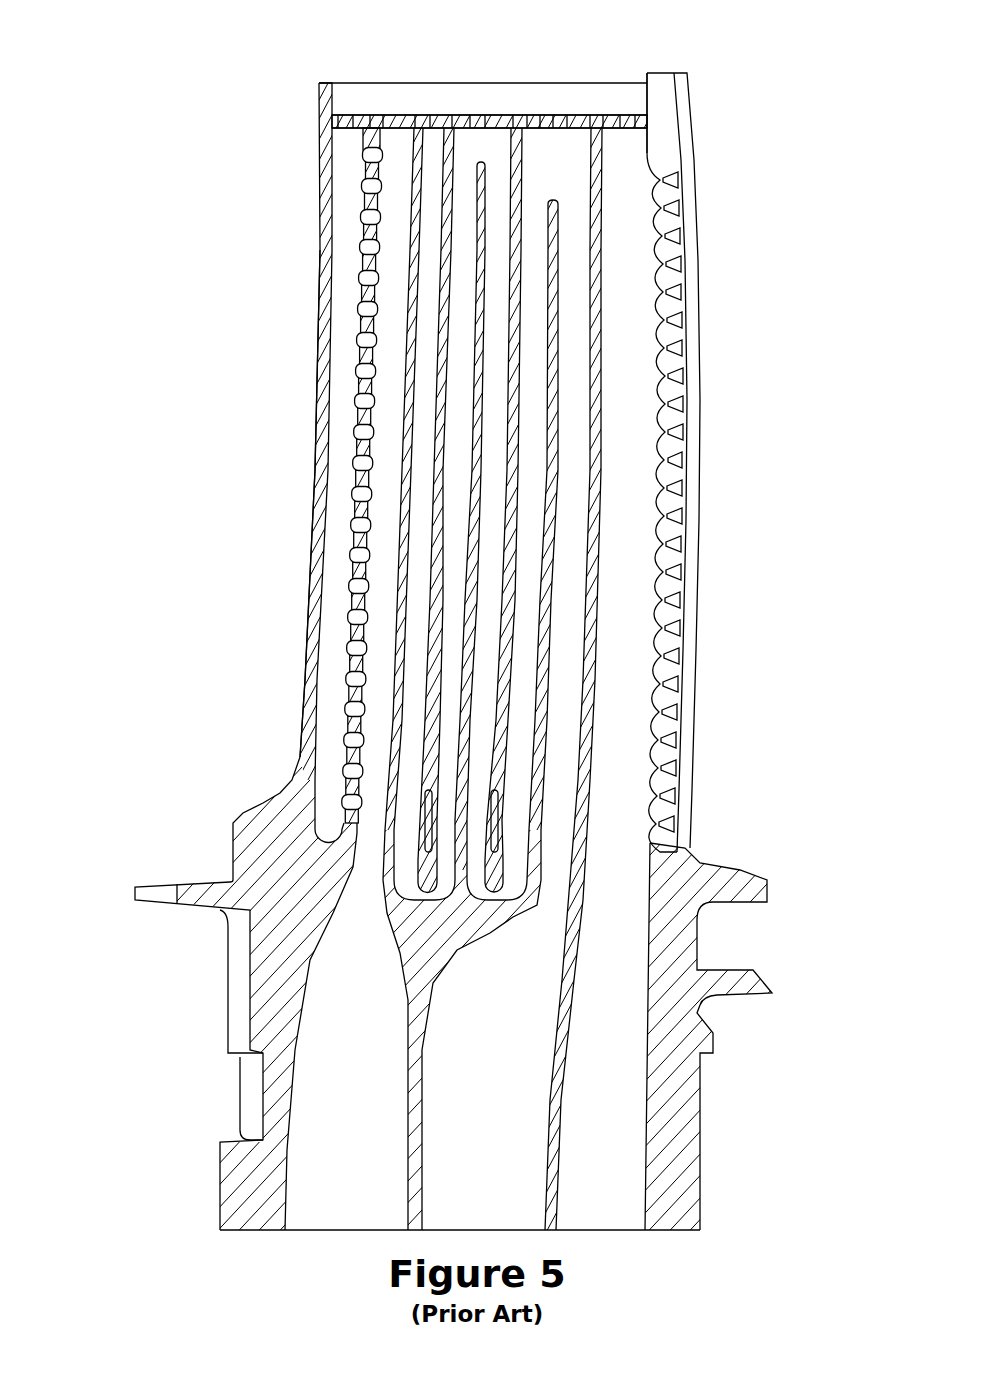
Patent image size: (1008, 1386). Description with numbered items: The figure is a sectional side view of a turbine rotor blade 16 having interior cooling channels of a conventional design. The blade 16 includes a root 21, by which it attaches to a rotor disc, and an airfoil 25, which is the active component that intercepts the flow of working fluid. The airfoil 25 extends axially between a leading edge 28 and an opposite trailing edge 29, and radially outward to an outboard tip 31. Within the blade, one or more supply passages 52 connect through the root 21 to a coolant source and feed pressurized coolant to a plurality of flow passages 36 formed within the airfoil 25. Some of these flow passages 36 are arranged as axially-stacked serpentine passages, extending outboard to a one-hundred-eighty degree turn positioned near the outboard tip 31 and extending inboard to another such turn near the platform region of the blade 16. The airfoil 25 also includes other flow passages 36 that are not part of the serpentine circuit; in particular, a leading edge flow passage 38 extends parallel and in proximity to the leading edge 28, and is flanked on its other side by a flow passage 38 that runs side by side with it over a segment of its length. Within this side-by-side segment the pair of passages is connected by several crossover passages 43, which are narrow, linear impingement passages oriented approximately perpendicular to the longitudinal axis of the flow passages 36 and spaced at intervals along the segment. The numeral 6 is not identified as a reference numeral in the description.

The turbine rotor blade 16 is at (132, 201).
The outboard tip 31 is at (505, 80).
The leading edge flow passage 38 is at (343, 212).
The leading edge 28 is at (318, 600).
The root 21 is at (158, 1070).
The supply passage 52 is at (337, 1140).
The flow passages 36 is at (381, 208).
The rib 6 is at (365, 273).
The crossover passages 43 is at (370, 156).
The airfoil 25 is at (795, 328).
The trailing edge 29 is at (700, 395).